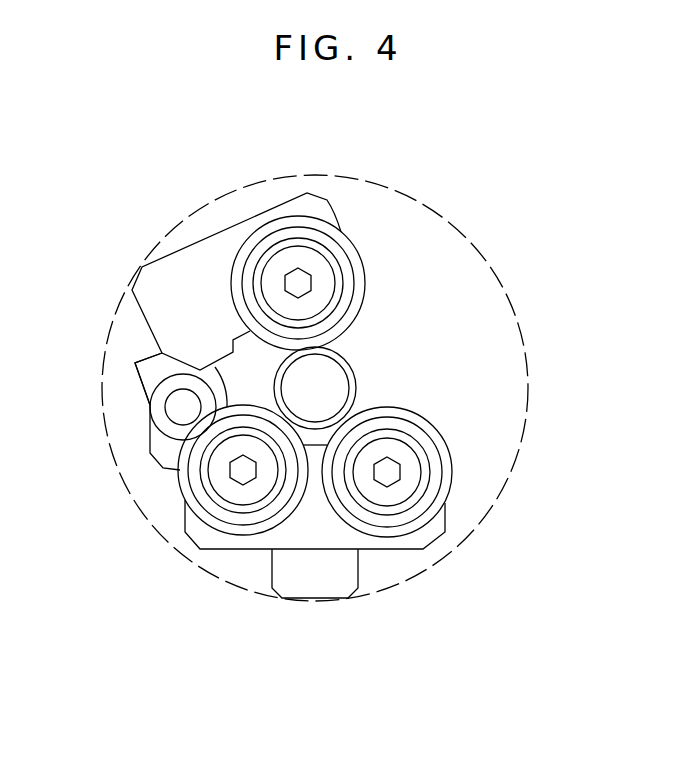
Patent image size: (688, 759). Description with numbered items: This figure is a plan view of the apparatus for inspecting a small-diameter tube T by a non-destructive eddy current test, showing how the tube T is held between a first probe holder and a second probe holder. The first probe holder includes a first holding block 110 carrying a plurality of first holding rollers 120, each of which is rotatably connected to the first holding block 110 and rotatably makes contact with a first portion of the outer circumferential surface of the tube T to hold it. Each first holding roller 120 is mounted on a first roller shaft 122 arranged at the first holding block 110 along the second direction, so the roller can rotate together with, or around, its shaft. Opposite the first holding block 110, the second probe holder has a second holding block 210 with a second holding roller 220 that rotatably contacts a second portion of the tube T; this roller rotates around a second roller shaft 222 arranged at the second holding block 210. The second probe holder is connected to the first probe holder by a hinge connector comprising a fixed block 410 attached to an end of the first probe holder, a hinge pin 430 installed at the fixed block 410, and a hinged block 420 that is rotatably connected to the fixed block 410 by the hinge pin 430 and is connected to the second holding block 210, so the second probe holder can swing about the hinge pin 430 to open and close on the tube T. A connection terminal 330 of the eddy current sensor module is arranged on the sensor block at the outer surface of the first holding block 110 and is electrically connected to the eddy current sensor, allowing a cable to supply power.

The first holding block 110 is at (427, 537).
The first holding rollers 120 is at (181, 488).
The first roller shaft 122 is at (240, 477).
The second holding block 210 is at (183, 277).
The second holding roller 220 is at (353, 241).
The second roller shaft 222 is at (297, 280).
The connection terminal 330 is at (318, 582).
The fixed block 410 is at (150, 455).
The hinged block 420 is at (135, 363).
The hinge pin 430 is at (172, 412).
The tube T is at (355, 374).